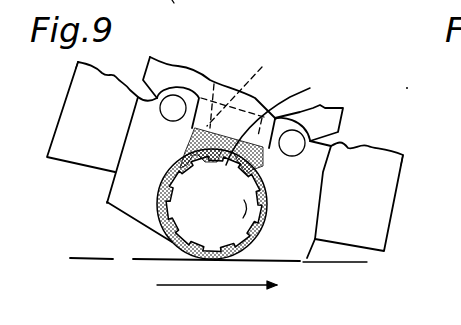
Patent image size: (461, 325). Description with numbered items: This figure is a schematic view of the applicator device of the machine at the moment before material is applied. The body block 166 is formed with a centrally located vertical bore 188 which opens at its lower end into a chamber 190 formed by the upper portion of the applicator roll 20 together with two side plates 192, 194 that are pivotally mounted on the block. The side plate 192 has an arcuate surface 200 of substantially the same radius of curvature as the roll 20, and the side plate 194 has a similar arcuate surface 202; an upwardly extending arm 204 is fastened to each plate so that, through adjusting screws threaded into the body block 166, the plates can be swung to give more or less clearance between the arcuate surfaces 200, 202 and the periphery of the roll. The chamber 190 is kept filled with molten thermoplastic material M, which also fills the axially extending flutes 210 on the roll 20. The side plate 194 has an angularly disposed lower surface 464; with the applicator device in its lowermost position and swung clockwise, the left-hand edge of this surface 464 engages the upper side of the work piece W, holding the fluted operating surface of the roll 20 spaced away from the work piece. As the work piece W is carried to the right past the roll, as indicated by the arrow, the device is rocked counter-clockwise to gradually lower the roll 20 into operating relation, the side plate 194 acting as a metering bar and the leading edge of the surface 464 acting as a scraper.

The body block 166 is at (198, 68).
The vertical bore 188 is at (245, 92).
The chamber 190 is at (284, 116).
The side plate 192 is at (128, 135).
The side plate 194 is at (317, 223).
The arcuate surface 200 is at (161, 182).
The arcuate surface 202 is at (268, 214).
The arm 204 is at (71, 82).
The flutes 210 is at (176, 248).
The applicator roll 20 is at (222, 217).
The lower surface 464 is at (253, 262).
The molten thermoplastic material M is at (263, 160).
The work piece W is at (350, 264).